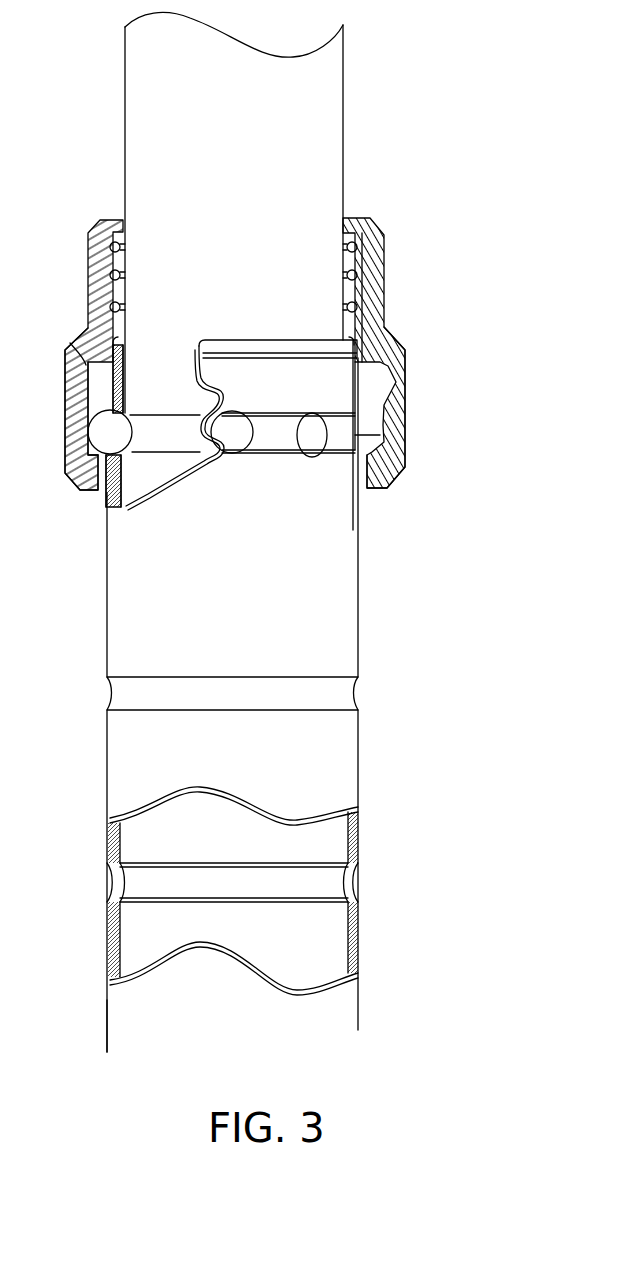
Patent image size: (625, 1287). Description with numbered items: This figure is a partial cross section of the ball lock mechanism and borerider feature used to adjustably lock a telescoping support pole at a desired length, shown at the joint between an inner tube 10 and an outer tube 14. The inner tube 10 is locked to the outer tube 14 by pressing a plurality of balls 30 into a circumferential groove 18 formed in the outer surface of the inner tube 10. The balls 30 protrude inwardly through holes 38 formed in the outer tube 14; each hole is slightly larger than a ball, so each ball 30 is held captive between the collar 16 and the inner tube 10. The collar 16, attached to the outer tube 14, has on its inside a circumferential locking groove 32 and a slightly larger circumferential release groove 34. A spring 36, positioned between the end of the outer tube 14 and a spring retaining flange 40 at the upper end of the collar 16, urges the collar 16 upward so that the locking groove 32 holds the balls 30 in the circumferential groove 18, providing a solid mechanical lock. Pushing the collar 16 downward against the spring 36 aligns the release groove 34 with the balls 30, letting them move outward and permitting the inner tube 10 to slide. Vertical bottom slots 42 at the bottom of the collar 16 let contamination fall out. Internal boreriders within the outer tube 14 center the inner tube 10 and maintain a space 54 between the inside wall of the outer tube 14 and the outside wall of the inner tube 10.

The inner tube 10 is at (124, 100).
The outer tube 14 is at (105, 933).
The collar 16 is at (73, 337).
The circumferential groove 18 is at (150, 456).
The balls 30 is at (102, 445).
The locking groove 32 is at (86, 413).
The release groove 34 is at (85, 365).
The spring 36 is at (114, 241).
The holes 38 is at (336, 411).
The spring retaining flange 40 is at (350, 218).
The vertical bottom slots 42 is at (363, 493).
The space 54 is at (112, 497).